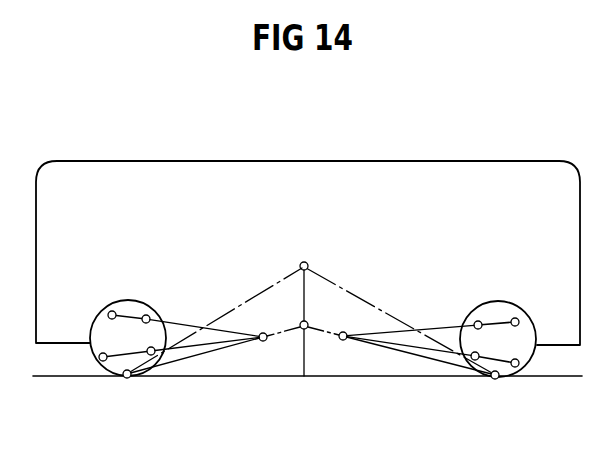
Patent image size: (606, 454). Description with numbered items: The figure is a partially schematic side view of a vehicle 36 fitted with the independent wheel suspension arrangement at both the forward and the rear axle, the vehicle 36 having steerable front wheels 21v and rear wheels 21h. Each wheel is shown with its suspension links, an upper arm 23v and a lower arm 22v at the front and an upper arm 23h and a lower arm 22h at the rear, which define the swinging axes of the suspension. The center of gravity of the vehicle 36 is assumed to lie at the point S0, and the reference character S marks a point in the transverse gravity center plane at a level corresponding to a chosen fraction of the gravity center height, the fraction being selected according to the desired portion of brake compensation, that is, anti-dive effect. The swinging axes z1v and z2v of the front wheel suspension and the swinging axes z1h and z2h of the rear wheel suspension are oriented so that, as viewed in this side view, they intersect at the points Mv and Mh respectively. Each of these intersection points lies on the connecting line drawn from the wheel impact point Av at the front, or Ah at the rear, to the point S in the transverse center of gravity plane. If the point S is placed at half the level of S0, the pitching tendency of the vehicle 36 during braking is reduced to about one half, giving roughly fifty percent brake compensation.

The vehicle 36 is at (228, 170).
The steerable front wheels 21v is at (96, 314).
The rear wheels 21h is at (528, 340).
The front lower control arm 22v is at (136, 353).
The rear lower control arm 22h is at (500, 360).
The front upper control arm 23v is at (131, 316).
The rear upper control arm 23h is at (492, 321).
The swinging axis of the front wheel suspension z1v is at (205, 348).
The swinging axis of the front wheel suspension z2v is at (180, 322).
The swinging axis of the rear wheel suspension z1h is at (408, 353).
The swinging axis of the rear wheel suspension z2h is at (413, 331).
The wheel impact point Av is at (128, 387).
The wheel impact point Ah is at (497, 388).
The intersection point of the front swinging axes Mv is at (266, 349).
The intersection point of the rear swinging axes Mh is at (337, 349).
The center of gravity S0 is at (306, 253).
The point in the transverse gravity center plane S is at (307, 315).